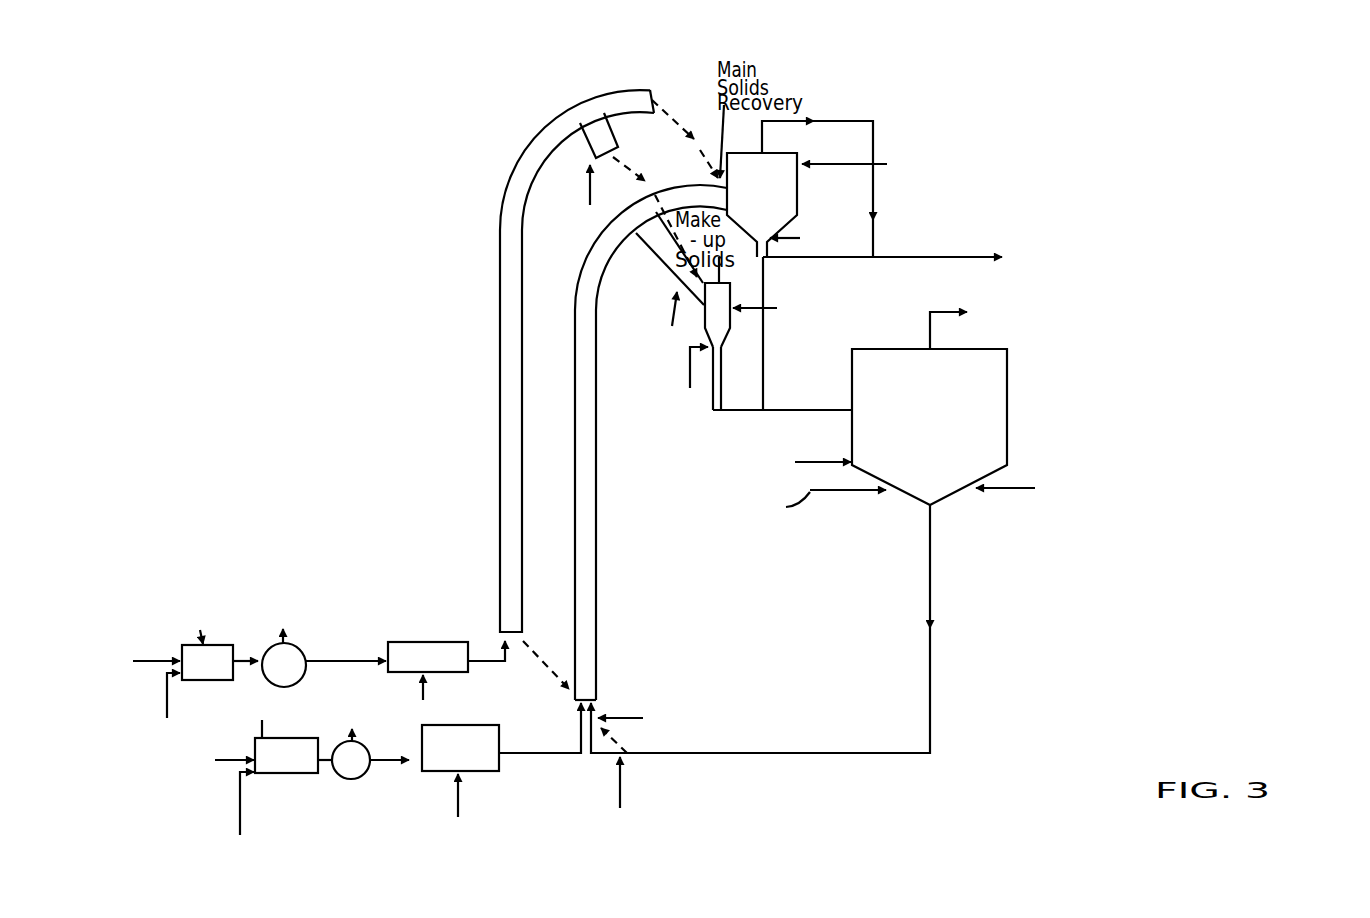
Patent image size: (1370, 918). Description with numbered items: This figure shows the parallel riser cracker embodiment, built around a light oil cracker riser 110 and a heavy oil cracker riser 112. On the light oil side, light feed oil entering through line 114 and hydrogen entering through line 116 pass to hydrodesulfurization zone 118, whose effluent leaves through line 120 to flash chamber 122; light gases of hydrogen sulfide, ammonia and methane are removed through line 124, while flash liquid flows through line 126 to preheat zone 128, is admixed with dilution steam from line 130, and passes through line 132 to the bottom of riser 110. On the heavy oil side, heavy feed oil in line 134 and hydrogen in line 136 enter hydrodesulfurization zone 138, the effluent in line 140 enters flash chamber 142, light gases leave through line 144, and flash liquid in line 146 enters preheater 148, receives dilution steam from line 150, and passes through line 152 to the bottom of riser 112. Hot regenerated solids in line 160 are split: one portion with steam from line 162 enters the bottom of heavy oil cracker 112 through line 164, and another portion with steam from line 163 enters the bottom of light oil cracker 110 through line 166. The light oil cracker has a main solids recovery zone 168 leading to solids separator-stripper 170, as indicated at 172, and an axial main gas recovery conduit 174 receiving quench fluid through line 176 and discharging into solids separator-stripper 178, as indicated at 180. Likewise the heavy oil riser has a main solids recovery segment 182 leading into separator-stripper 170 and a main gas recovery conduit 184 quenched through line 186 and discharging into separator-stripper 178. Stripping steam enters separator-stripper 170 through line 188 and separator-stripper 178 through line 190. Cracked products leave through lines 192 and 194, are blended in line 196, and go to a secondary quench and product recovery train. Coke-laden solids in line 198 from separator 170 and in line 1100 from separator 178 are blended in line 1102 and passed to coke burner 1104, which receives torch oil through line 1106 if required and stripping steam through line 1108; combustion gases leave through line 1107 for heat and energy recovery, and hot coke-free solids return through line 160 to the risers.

The light oil cracker riser 110 is at (500, 400).
The heavy oil cracker riser 112 is at (574, 428).
The light feed oil line 114 is at (146, 660).
The hydrogen line 116 is at (184, 699).
The hydrodesulfurization zone 118 is at (214, 680).
The hydrodesulfurized effluent line 120 is at (247, 657).
The flash chamber 122 is at (302, 675).
The light gases line 124 is at (307, 637).
The flash liquid line 126 is at (328, 656).
The preheat zone 128 is at (458, 641).
The dilution steam line 130 is at (421, 684).
The light oil feed line 132 is at (496, 659).
The heavy feed oil line 134 is at (206, 774).
The hydrogen line 136 is at (242, 834).
The hydrodesulfurization zone 138 is at (283, 774).
The hydrodesulfurized effluent line 140 is at (323, 762).
The flash chamber 142 is at (365, 772).
The light gases line 144 is at (356, 740).
The flash liquid line 146 is at (400, 758).
The preheater 148 is at (502, 730).
The dilution steam line 150 is at (464, 819).
The heavy oil feed line 152 is at (543, 753).
The hot regenerated solids line 160 is at (700, 753).
The steam line 162 is at (621, 770).
The steam line 163 is at (627, 718).
The solids inlet line 164 is at (606, 757).
The solids inlet line 166 is at (546, 658).
The main solids recovery zone 168 is at (625, 88).
The solids separator-stripper 170 is at (780, 153).
The solids passage to separator-stripper 172 is at (669, 100).
The axial main gas recovery conduit 174 is at (611, 135).
The quench fluid line 176 is at (590, 178).
The solids separator-stripper 178 is at (741, 268).
The gas discharge to separator-stripper 180 is at (607, 153).
The main solids recovery segment 182 is at (685, 142).
The main gas recovery conduit 184 is at (643, 242).
The quench fluid line 186 is at (672, 303).
The stripping steam line 188 is at (792, 305).
The stripping steam line 190 is at (690, 362).
The cracked products line 192 is at (886, 108).
The cracked products line 194 is at (818, 247).
The blended cracked products line 196 is at (897, 259).
The coke-laden solids line 198 is at (764, 371).
The coke-laden solids line 1100 is at (738, 333).
The blended coke-laden solids line 1102 is at (782, 407).
The coke burner 1104 is at (1008, 402).
The torch oil line 1106 is at (835, 492).
The combustion gases line 1107 is at (821, 478).
The stripping steam line 1108 is at (990, 492).